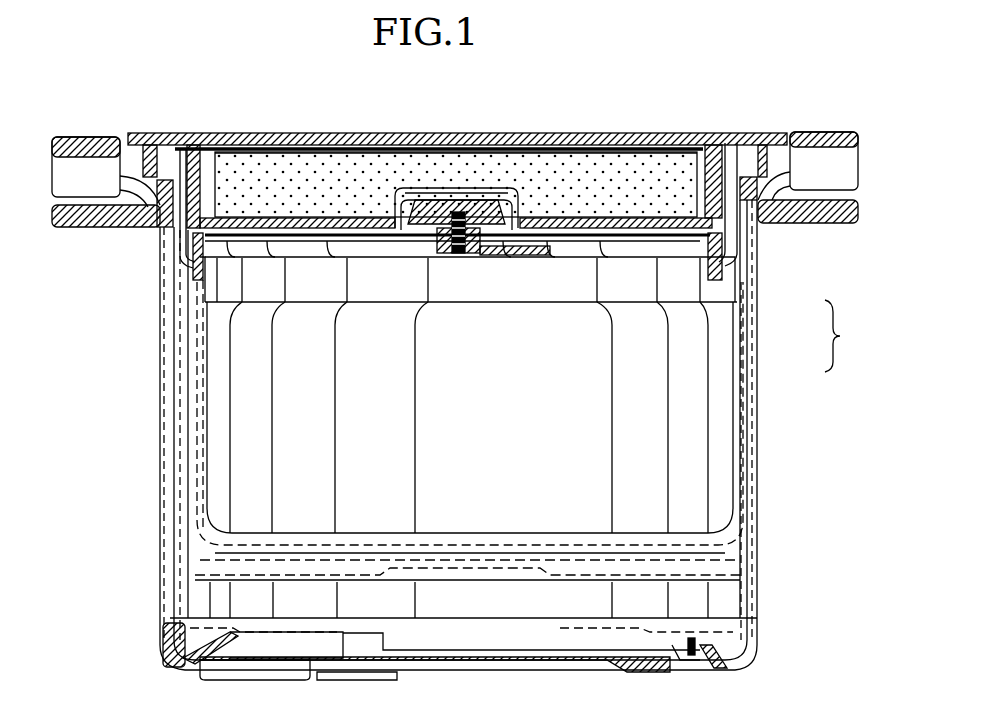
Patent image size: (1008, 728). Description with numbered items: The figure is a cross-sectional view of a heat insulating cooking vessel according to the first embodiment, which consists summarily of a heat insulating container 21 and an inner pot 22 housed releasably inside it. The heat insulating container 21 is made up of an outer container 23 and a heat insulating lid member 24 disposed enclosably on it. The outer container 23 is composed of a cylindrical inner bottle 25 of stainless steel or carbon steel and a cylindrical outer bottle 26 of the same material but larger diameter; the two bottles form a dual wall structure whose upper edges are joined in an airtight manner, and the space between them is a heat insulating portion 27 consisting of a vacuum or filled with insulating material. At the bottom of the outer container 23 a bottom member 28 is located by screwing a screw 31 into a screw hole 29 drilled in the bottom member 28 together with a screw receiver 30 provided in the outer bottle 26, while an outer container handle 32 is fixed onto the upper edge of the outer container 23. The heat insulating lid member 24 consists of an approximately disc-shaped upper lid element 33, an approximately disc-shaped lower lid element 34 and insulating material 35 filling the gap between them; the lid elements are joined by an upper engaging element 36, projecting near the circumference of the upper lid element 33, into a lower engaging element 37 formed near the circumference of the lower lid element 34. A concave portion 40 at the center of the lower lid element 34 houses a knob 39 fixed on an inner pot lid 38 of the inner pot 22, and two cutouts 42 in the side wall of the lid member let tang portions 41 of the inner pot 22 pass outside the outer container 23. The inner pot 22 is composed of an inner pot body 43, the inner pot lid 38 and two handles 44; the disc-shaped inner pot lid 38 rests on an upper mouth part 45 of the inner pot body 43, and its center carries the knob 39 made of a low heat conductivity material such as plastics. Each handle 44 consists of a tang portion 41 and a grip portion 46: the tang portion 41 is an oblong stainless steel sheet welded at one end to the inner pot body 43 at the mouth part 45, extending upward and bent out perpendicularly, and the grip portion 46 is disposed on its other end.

The heat insulating container 21 is at (768, 281).
The inner pot 22 is at (180, 318).
The outer container 23 is at (851, 336).
The heat insulating lid member 24 is at (295, 136).
The inner bottle 25 is at (747, 322).
The outer bottle 26 is at (757, 353).
The heat insulating portion 27 is at (733, 586).
The bottom member 28 is at (757, 640).
The screw hole 29 is at (673, 672).
The screw receiver 30 is at (707, 653).
The screw 31 is at (690, 660).
The outer container handle 32 is at (855, 212).
The upper lid element 33 is at (605, 136).
The lower lid element 34 is at (625, 210).
The insulating material 35 is at (398, 160).
The upper engaging element 36 is at (176, 146).
The lower engaging element 37 is at (222, 143).
The inner pot lid 38 is at (197, 273).
The knob 39 is at (517, 193).
The concave portion 40 is at (467, 180).
The tang portion 41 is at (185, 240).
The cutout 42 is at (703, 170).
The inner pot body 43 is at (177, 362).
The handle 44 is at (165, 230).
The mouth part 45 is at (200, 297).
The grip portion 46 is at (83, 138).